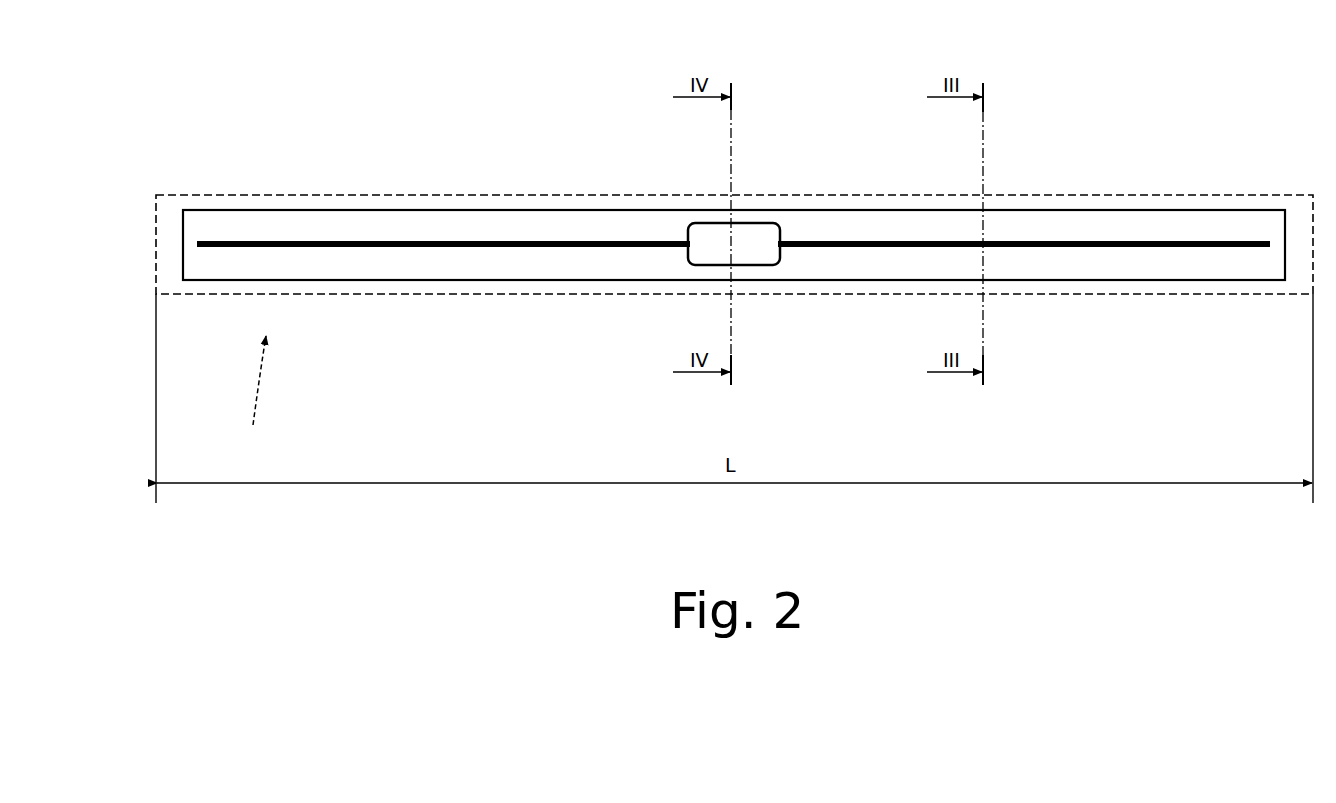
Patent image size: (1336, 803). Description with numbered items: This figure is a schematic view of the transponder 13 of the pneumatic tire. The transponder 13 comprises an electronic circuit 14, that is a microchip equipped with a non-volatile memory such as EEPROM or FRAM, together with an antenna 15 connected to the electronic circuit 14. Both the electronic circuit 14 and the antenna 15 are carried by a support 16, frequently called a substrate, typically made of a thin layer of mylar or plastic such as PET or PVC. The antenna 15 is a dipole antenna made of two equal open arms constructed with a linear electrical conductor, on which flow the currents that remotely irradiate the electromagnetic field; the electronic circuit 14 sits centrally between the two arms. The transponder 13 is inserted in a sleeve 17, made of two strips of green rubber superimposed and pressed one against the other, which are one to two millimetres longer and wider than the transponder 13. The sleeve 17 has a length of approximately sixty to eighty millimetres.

The transponder 13 is at (342, 120).
The electronic circuit 14 is at (758, 243).
The antenna 15 is at (506, 243).
The support 16 is at (387, 259).
The sleeve 17 is at (254, 395).